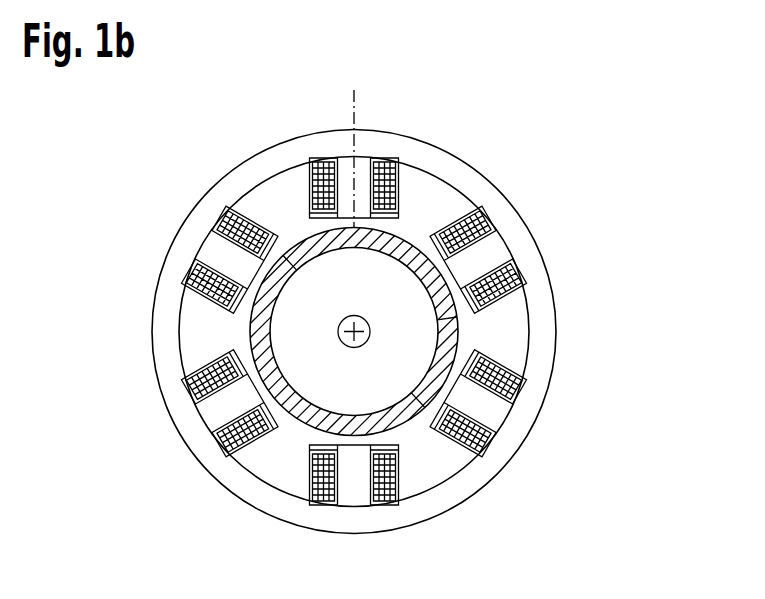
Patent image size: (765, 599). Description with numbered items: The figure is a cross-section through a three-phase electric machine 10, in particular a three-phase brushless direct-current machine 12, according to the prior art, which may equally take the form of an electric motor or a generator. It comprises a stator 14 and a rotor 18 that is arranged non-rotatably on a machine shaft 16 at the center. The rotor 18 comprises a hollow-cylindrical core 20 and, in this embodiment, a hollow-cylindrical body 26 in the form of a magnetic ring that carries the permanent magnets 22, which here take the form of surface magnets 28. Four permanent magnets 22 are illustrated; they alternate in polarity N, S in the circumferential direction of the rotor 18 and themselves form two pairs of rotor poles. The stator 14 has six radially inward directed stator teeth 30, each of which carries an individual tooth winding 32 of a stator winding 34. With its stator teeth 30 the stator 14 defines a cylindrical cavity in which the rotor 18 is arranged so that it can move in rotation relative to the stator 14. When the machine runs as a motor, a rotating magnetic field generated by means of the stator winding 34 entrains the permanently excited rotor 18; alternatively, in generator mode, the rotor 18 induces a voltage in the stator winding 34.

The three-phase electric machine 10 is at (419, 280).
The three-phase brushless direct-current machine 12 is at (419, 280).
The stator 14 is at (472, 190).
The machine shaft 16 is at (354, 332).
The rotor 18 is at (304, 236).
The hollow-cylindrical core 20 is at (293, 292).
The permanent magnets 22 is at (316, 259).
The hollow-cylindrical body 26 is at (307, 247).
The surface magnets 28 is at (298, 253).
The stator teeth 30 is at (345, 170).
The individual tooth winding 32 is at (353, 277).
The stator winding 34 is at (391, 162).